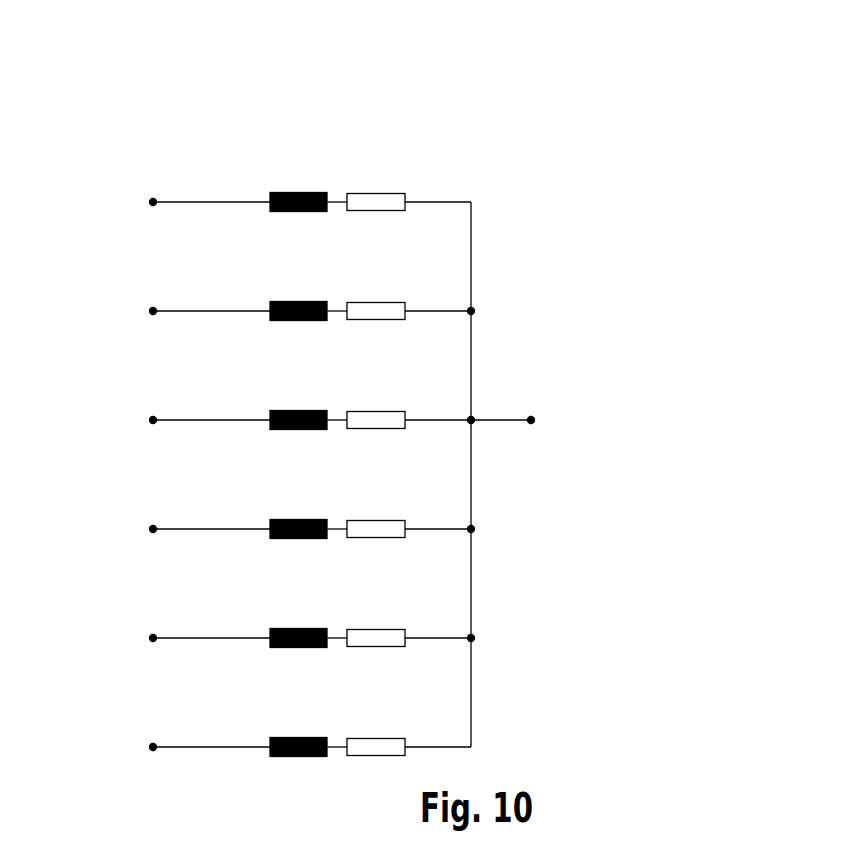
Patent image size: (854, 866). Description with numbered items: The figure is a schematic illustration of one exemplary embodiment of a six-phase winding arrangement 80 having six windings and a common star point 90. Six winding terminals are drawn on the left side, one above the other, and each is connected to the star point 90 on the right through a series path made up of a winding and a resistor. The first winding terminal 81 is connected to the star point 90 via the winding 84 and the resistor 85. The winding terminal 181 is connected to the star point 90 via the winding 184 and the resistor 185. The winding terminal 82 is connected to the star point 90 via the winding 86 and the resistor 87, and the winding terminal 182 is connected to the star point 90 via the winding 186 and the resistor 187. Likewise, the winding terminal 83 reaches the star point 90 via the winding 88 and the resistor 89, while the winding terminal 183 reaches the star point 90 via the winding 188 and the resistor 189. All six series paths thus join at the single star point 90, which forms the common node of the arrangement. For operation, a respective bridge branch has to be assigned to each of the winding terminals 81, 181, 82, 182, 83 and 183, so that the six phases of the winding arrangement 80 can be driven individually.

The six-phase winding arrangement 80 is at (452, 107).
The first winding terminal 81 is at (153, 202).
The winding terminal 82 is at (153, 420).
The winding terminal 83 is at (153, 638).
The winding terminal 181 is at (153, 311).
The winding terminal 182 is at (153, 529).
The winding terminal 183 is at (153, 747).
The star point 90 is at (473, 418).
The winding 84 is at (300, 190).
The resistor 85 is at (378, 191).
The winding 184 is at (300, 299).
The resistor 185 is at (378, 300).
The winding 86 is at (300, 408).
The resistor 87 is at (378, 409).
The winding 186 is at (300, 517).
The resistor 187 is at (378, 518).
The winding 88 is at (300, 626).
The resistor 89 is at (378, 627).
The winding 188 is at (300, 735).
The resistor 189 is at (378, 736).